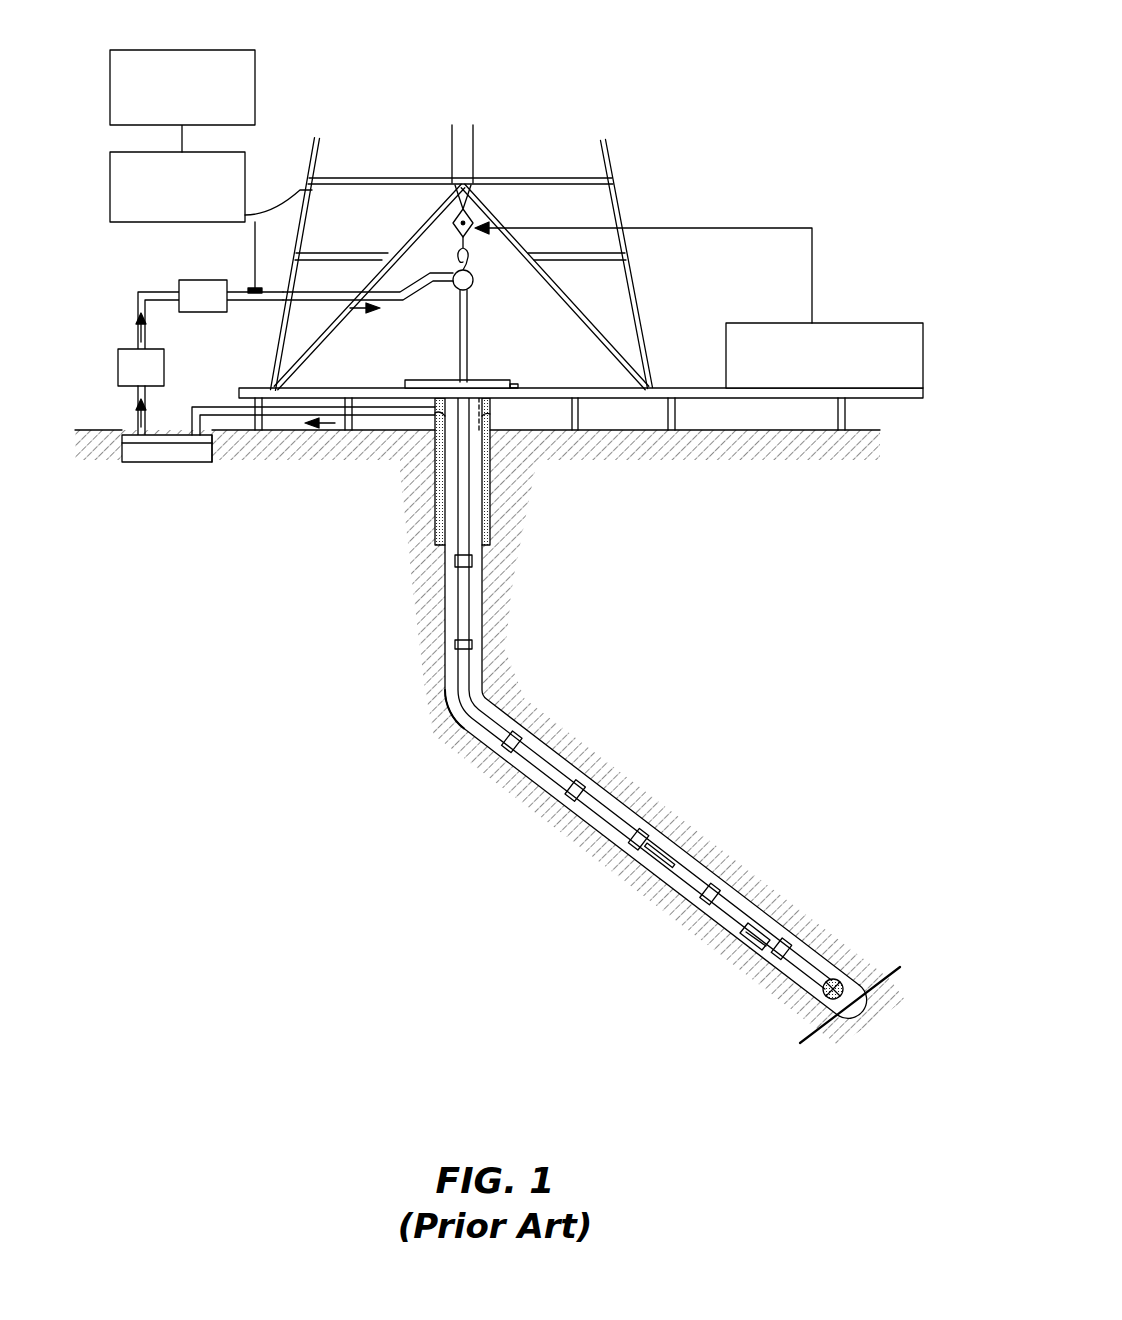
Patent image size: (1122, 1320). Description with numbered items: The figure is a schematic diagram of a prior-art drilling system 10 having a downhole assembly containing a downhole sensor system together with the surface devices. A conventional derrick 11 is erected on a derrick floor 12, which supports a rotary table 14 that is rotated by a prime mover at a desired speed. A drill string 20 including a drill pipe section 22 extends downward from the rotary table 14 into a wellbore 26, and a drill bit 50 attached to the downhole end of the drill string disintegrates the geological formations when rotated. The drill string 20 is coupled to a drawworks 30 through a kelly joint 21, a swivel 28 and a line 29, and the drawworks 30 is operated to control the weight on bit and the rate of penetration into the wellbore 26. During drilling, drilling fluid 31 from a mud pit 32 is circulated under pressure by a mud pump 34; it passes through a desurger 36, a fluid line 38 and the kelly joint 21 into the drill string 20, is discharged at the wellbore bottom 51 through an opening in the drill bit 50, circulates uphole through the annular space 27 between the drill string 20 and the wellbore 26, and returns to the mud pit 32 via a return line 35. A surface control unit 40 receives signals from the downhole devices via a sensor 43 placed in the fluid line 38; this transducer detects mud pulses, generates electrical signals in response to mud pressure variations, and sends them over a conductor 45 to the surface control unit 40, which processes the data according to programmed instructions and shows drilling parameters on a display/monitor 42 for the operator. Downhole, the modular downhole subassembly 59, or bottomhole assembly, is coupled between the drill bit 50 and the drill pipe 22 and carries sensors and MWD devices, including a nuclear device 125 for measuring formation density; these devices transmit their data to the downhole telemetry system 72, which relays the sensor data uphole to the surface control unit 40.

The drilling system 10 is at (670, 62).
The derrick 11 is at (618, 200).
The derrick floor 12 is at (655, 388).
The rotary table 14 is at (490, 380).
The drill string 20 is at (480, 568).
The kelly joint 21 is at (470, 330).
The drill pipe section 22 is at (456, 637).
The wellbore 26 is at (486, 698).
The annular space 27 is at (499, 720).
The swivel 28 is at (445, 285).
The line 29 is at (476, 162).
The drawworks 30 is at (848, 323).
The drilling fluid 31 is at (127, 450).
The mud pit 32 is at (194, 462).
The mud pump 34 is at (118, 365).
The return line 35 is at (291, 418).
The desurger 36 is at (183, 280).
The fluid line 38 is at (240, 301).
The surface control unit 40 is at (246, 152).
The display/monitor 42 is at (200, 50).
The sensor 43 is at (248, 288).
The conductor 45 is at (297, 197).
The drill bit 50 is at (850, 982).
The wellbore bottom 51 is at (803, 1045).
The downhole subassembly 59 is at (641, 711).
The downhole telemetry system 72 is at (578, 812).
The nuclear device 125 is at (760, 918).